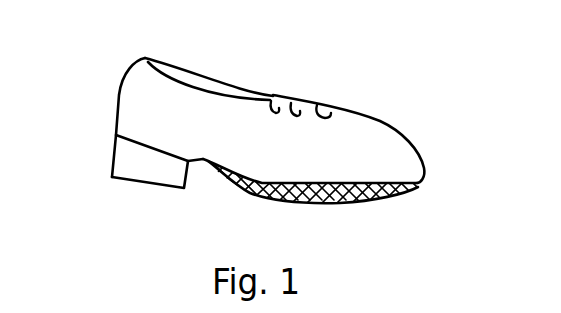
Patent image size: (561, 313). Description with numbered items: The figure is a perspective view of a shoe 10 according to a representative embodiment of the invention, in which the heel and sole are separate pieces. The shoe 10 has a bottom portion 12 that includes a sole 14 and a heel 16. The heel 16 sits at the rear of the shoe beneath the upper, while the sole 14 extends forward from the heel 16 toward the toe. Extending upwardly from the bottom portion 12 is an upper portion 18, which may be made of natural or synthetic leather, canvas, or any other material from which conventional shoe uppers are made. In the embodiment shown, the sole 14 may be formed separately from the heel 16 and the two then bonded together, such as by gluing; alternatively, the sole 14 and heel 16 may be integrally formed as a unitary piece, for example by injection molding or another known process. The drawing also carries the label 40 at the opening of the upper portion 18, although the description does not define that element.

The shoe 10 is at (437, 110).
The bottom portion 12 is at (340, 204).
The sole 14 is at (290, 205).
The heel 16 is at (112, 177).
The upper portion 18 is at (118, 100).
The collar / topline opening 40 is at (193, 85).